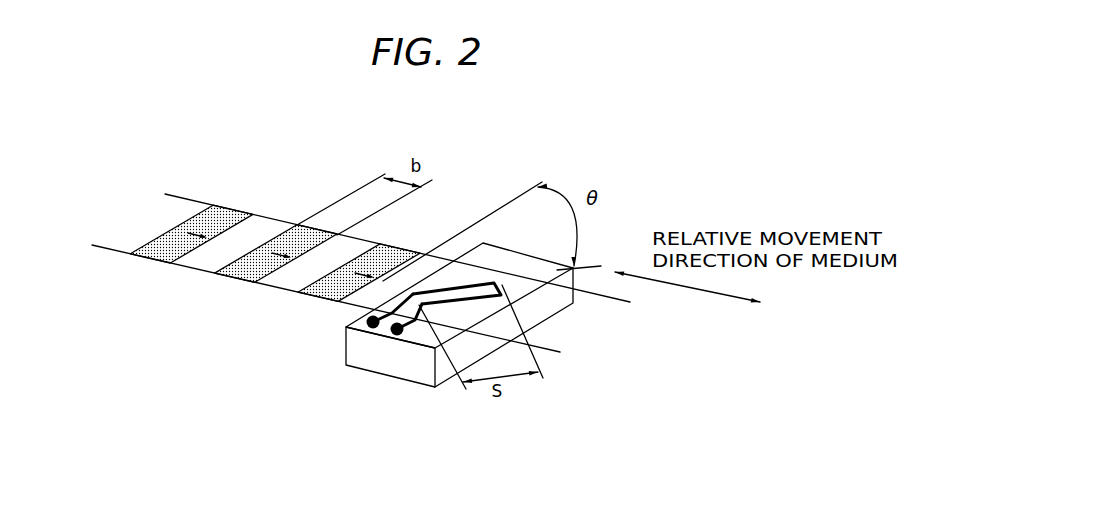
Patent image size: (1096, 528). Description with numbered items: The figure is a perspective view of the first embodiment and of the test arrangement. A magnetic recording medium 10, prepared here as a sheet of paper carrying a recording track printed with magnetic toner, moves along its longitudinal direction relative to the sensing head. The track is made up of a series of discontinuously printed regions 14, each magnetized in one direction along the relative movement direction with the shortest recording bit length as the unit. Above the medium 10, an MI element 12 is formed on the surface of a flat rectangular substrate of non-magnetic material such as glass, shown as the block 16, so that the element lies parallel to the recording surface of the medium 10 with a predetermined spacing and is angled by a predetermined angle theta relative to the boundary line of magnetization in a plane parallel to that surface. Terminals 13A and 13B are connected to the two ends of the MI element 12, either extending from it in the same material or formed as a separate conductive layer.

The magnetic recording medium 10 is at (178, 196).
The discontinuously printed region 14 is at (225, 217).
The MI element 12 is at (455, 286).
The substrate (head body) 16 is at (363, 348).
The terminal 13A is at (374, 327).
The terminal 13B is at (399, 333).